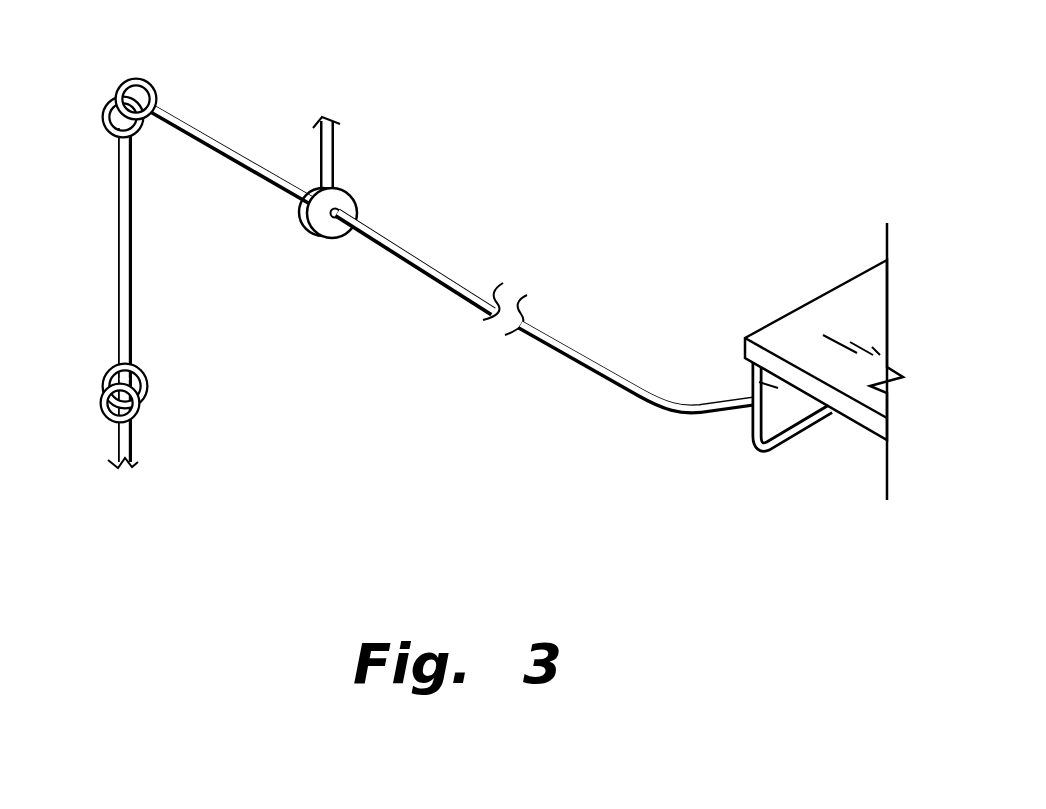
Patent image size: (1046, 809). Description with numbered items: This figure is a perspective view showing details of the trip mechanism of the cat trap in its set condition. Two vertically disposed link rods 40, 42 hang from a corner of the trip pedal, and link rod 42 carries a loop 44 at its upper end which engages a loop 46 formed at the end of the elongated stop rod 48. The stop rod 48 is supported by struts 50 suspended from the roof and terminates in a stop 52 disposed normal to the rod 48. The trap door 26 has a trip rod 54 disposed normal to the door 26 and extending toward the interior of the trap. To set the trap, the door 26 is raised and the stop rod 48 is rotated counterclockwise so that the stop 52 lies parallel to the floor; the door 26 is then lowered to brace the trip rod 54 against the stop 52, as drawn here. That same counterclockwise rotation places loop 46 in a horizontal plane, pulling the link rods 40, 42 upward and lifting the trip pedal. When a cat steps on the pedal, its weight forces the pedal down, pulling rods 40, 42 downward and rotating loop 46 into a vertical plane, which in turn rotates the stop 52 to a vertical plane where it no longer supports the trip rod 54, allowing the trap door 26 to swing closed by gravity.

The trap door 26 is at (735, 367).
The link rod 40 is at (130, 446).
The link rod 42 is at (134, 177).
The loop 44 is at (132, 80).
The loop 46 is at (99, 112).
The stop rod 48 is at (214, 140).
The strut 50 is at (338, 176).
The stop 52 is at (720, 400).
The trip rod 54 is at (748, 426).